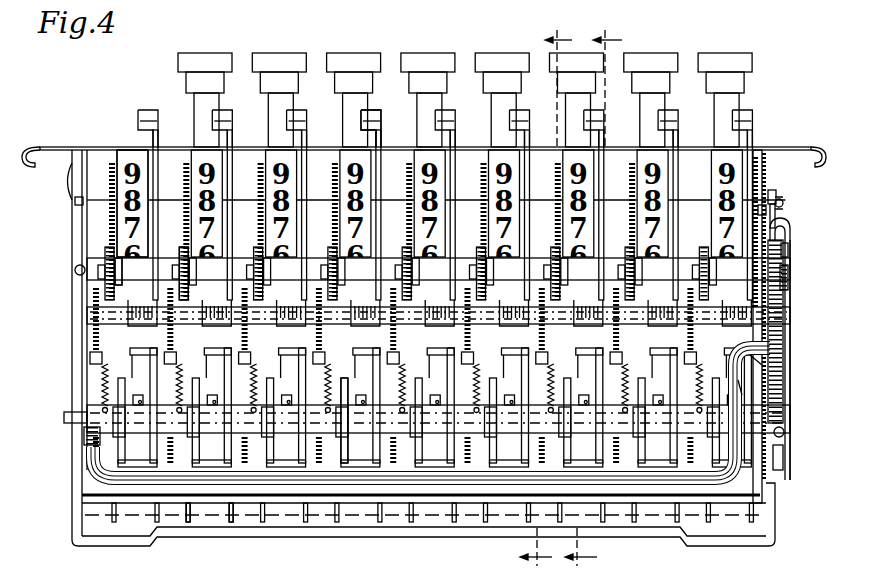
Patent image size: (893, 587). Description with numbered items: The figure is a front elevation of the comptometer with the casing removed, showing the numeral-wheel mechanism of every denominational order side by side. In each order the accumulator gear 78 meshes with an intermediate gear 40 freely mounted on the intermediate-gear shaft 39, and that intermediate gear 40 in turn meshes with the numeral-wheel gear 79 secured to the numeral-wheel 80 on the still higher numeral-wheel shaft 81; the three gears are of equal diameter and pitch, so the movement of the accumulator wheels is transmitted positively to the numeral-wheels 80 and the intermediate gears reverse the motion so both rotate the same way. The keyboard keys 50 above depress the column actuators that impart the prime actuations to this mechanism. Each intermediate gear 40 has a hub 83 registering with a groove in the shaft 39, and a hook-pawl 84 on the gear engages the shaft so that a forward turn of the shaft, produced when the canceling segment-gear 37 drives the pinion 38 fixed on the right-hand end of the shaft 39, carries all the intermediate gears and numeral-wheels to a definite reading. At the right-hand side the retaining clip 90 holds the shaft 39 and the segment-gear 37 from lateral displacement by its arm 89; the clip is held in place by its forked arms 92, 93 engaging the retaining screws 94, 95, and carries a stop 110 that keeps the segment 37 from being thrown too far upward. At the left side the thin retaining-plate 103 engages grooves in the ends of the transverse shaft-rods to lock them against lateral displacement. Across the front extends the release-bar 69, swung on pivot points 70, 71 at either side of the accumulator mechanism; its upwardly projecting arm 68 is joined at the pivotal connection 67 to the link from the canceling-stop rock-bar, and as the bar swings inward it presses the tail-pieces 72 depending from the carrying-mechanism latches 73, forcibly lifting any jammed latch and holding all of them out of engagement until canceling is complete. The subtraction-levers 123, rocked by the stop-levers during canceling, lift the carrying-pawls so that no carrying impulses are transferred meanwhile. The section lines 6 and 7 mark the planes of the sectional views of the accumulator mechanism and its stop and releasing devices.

The section line 6- 6 is at (593, 298).
The section line 7- 7 is at (546, 299).
The segment-gear 37 is at (785, 322).
The pinion 38 is at (788, 249).
The intermediate-gear shaft 39 is at (75, 270).
The intermediate gears 40 is at (108, 252).
The keyboard keys 50 is at (260, 55).
The forward pivotal connection of link 67 is at (760, 363).
The upwardly projecting arm 68 is at (740, 388).
The release-bar 69 is at (450, 497).
The pivot point of release-bar 70 is at (740, 415).
The pivot point of release-bar 71 is at (85, 410).
The tail-pieces 72 is at (293, 487).
The carrying-mechanism latches 73 is at (312, 402).
The accumulator gears 78 is at (100, 332).
The numeral-wheel gears 79 is at (185, 163).
The numeral-wheels 80 is at (124, 156).
The numeral-wheel shaft 81 is at (76, 201).
The hub of intermediate gear 83 is at (438, 269).
The hook-pawl 84 is at (257, 258).
The arm of retaining clip 89 is at (789, 276).
The retaining clip 90 is at (791, 358).
The forked arm of retaining clip 92 is at (776, 198).
The forked arm of retaining clip 93 is at (784, 455).
The retaining screw 94 is at (784, 203).
The retaining screw 95 is at (787, 437).
The retaining-plate 103 is at (87, 340).
The stop 110 is at (789, 237).
The subtraction-levers 123 is at (381, 126).